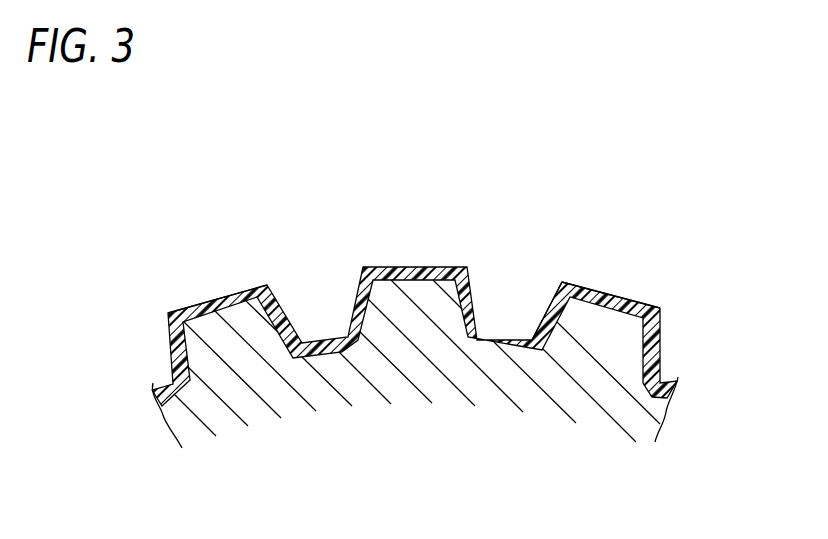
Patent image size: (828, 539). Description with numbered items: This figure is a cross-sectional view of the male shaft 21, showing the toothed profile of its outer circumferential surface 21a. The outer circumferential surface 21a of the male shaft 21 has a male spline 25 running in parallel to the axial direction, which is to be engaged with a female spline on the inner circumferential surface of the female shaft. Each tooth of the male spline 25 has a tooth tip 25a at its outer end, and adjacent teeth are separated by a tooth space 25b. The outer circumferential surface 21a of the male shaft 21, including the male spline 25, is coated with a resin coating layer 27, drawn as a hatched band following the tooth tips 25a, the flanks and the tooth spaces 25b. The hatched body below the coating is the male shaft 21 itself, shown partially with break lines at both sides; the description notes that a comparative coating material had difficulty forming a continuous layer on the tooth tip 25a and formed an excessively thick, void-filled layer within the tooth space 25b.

The male shaft 21 is at (455, 337).
The outer circumferential surface 21a is at (218, 292).
The male spline 25 is at (238, 353).
The tooth tip 25a is at (611, 298).
The tooth space 25b is at (504, 315).
The resin coating layer 27 is at (414, 290).